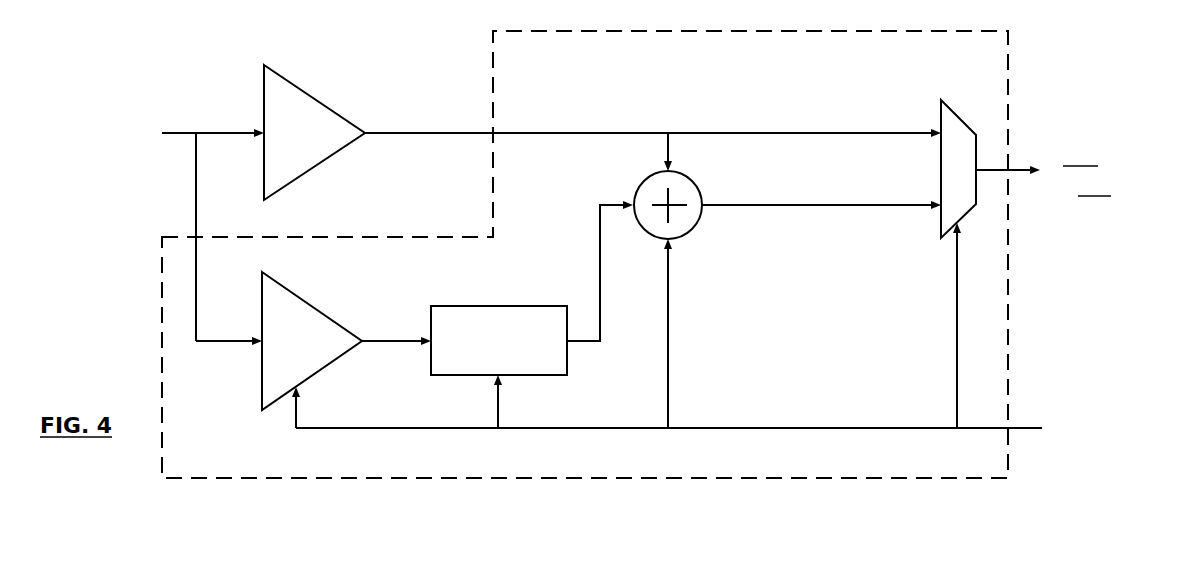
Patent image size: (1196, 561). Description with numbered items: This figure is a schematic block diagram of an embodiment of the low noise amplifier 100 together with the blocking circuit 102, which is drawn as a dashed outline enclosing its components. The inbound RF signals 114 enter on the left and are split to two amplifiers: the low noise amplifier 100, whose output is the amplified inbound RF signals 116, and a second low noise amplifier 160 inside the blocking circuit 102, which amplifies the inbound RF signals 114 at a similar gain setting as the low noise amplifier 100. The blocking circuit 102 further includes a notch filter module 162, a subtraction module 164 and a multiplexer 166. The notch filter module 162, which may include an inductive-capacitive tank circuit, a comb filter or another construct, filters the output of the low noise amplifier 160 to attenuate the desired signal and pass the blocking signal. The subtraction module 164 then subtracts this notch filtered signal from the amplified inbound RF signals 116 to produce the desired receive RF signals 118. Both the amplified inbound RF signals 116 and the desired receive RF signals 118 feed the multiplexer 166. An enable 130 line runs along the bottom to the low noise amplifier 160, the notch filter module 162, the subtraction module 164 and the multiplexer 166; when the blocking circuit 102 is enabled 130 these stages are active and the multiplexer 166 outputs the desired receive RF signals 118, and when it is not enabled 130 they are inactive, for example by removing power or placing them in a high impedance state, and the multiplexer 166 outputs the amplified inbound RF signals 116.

The low noise amplifier 100 is at (307, 158).
The blocking circuit 102 is at (1003, 65).
The inbound RF signals 114 is at (135, 153).
The amplified inbound RF signals 116 is at (372, 53).
The desired receive RF signals 118 is at (897, 295).
The enable 130 is at (1165, 438).
The low noise amplifier 160 is at (305, 365).
The notch filter module 162 is at (557, 365).
The subtraction module 164 is at (755, 181).
The multiplexer 166 is at (1036, 169).